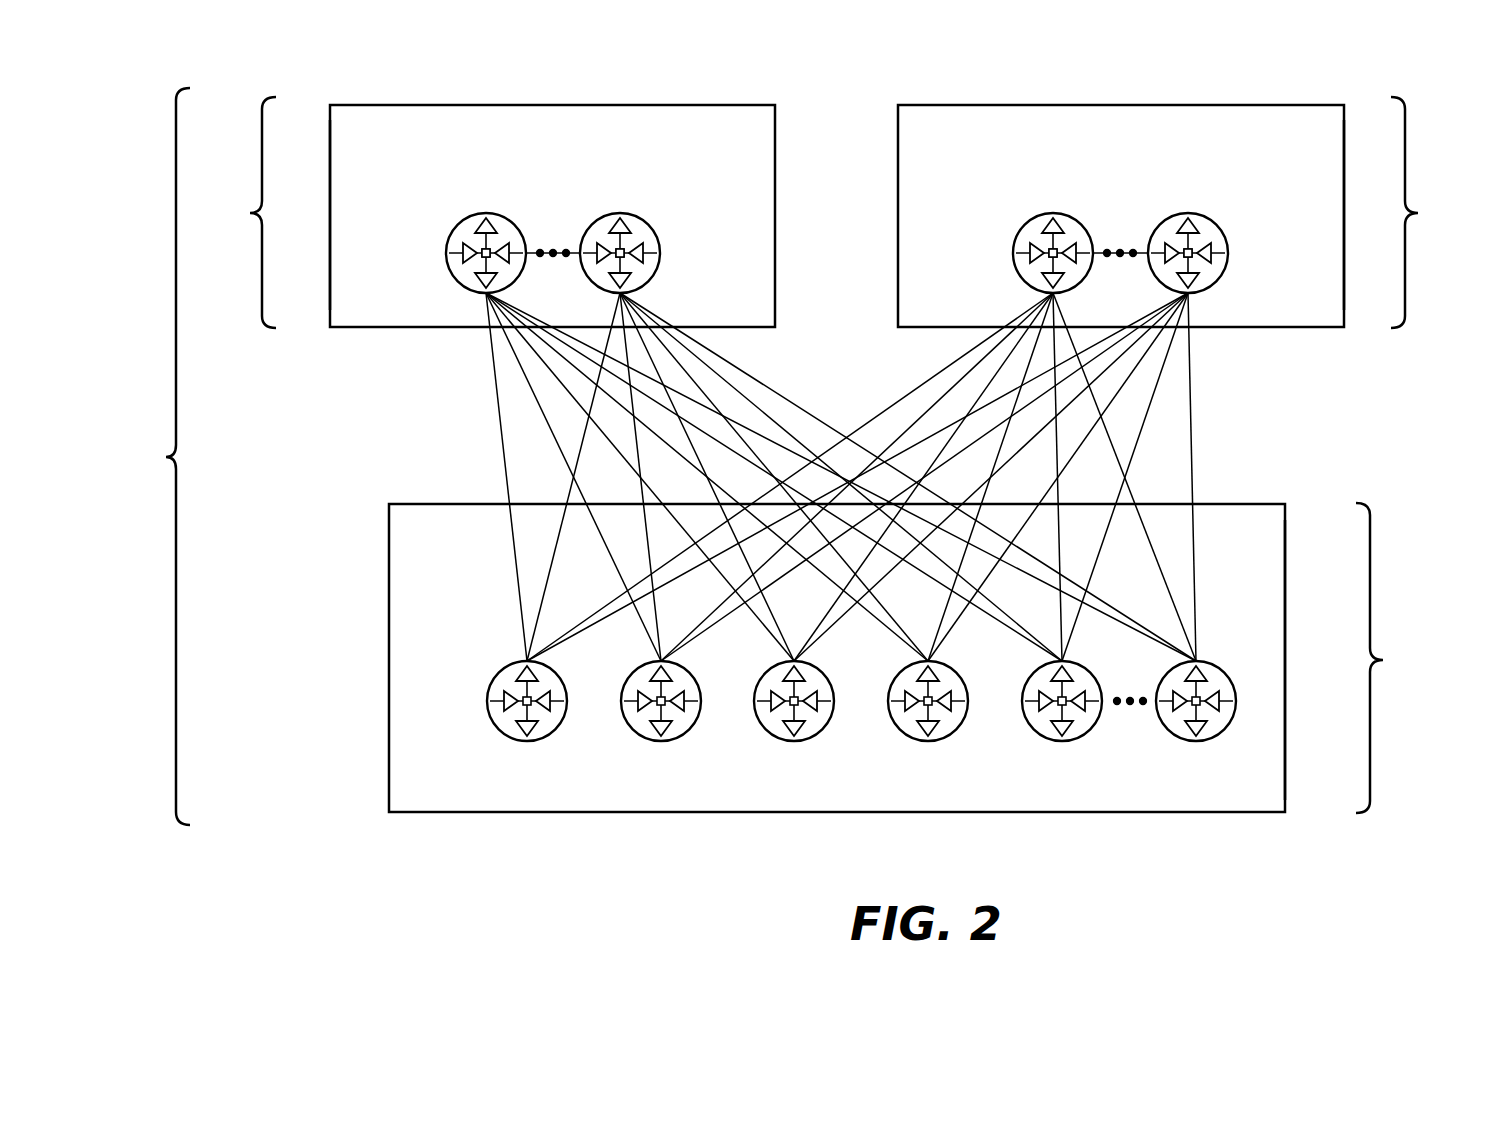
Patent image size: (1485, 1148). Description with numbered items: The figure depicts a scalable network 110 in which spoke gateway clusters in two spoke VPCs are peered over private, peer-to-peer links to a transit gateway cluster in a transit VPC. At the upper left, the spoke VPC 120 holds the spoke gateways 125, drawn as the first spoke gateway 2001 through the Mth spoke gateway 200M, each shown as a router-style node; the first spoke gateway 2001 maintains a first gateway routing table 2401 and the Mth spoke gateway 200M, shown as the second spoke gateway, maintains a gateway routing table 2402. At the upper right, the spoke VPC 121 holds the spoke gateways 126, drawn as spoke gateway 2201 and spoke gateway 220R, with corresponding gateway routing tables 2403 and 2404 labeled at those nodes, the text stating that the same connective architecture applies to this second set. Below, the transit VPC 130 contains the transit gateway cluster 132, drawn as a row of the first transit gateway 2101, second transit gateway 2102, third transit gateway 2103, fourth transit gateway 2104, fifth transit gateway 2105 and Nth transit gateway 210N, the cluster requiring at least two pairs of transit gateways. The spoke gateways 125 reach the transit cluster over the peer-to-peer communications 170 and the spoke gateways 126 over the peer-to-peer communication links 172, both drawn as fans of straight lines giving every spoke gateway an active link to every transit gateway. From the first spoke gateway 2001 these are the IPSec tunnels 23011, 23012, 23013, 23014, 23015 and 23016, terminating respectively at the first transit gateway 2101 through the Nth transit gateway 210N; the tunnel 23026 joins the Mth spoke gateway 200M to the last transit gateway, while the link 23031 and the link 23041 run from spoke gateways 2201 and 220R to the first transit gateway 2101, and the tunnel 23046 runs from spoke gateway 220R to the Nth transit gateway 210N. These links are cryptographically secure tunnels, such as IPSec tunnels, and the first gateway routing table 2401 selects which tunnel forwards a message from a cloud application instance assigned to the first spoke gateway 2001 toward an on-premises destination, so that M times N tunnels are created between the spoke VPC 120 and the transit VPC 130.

The scalable network 110 is at (151, 456).
The spoke VPC 120 is at (488, 212).
The spoke VPC 121 is at (1183, 212).
The spoke gateways 125 is at (330, 216).
The spoke gateways 126 is at (1344, 228).
The transit VPC 130 is at (910, 658).
The transit gateway cluster 132 is at (1285, 720).
The peer-to-peer communications 170 is at (440, 350).
The peer-to-peer communication links 172 is at (1240, 365).
The first spoke gateway 2001 is at (486, 213).
The spoke gateway 200M is at (620, 213).
The spoke gateway 2201 is at (1035, 218).
The spoke gateway 220R is at (1178, 217).
The first gateway routing table 2401 is at (486, 253).
The gateway routing table 2402 is at (620, 253).
The gateway router element 2403 is at (1053, 253).
The gateway router element 2404 is at (1188, 253).
The IPSec tunnel 23011 is at (497, 400).
The IPSec tunnel 23012 is at (575, 484).
The IPSec tunnel 23013 is at (524, 343).
The IPSec tunnel 23014 is at (566, 360).
The IPSec tunnel 23015 is at (727, 447).
The IPSec tunnel 23016 is at (638, 372).
The IPSec tunnel 23026 is at (773, 390).
The peer-to-peer communication link 23031 is at (930, 380).
The peer-to-peer communication link 23041 is at (1113, 338).
The IPSec tunnel 23046 is at (1200, 438).
The first transit gateway 2101 is at (487, 701).
The second transit gateway 2102 is at (661, 741).
The third transit gateway 2103 is at (794, 741).
The fourth transit gateway 2104 is at (928, 741).
The fifth transit gateway 2105 is at (1062, 741).
The transit gateway 210N is at (1196, 741).